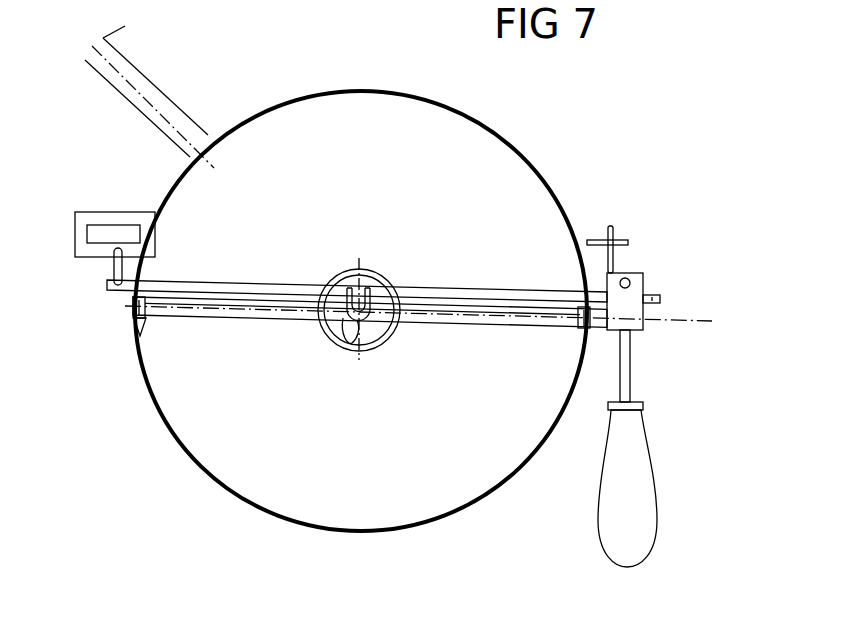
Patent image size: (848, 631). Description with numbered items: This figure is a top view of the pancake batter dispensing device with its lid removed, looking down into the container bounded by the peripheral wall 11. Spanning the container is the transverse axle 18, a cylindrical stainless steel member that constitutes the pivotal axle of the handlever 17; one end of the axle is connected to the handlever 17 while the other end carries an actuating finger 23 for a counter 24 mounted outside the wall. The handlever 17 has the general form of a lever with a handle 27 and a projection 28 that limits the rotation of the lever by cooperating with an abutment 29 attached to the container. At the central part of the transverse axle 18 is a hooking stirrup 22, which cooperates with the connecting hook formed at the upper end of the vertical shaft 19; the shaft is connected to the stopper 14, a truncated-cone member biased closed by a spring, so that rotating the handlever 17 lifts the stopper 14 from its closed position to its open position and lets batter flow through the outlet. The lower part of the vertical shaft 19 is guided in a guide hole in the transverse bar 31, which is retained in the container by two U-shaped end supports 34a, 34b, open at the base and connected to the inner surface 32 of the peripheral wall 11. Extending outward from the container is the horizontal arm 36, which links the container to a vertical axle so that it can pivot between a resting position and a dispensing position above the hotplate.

The peripheral wall 11 is at (539, 167).
The horizontal arm 36 is at (160, 98).
The counter 24 is at (88, 211).
The actuating finger 23 is at (117, 267).
The transverse axle 18 is at (235, 287).
The transverse bar 31 is at (462, 313).
The inner surface 32 is at (163, 378).
The end support 34a is at (137, 333).
The end support 34b is at (580, 332).
The stopper 14 is at (328, 338).
The vertical shaft 19 is at (352, 350).
The hooking stirrup 22 is at (383, 323).
The abutment 29 is at (590, 230).
The projection 28 is at (614, 258).
The handle 27 is at (635, 489).
The handlever 17 is at (699, 376).